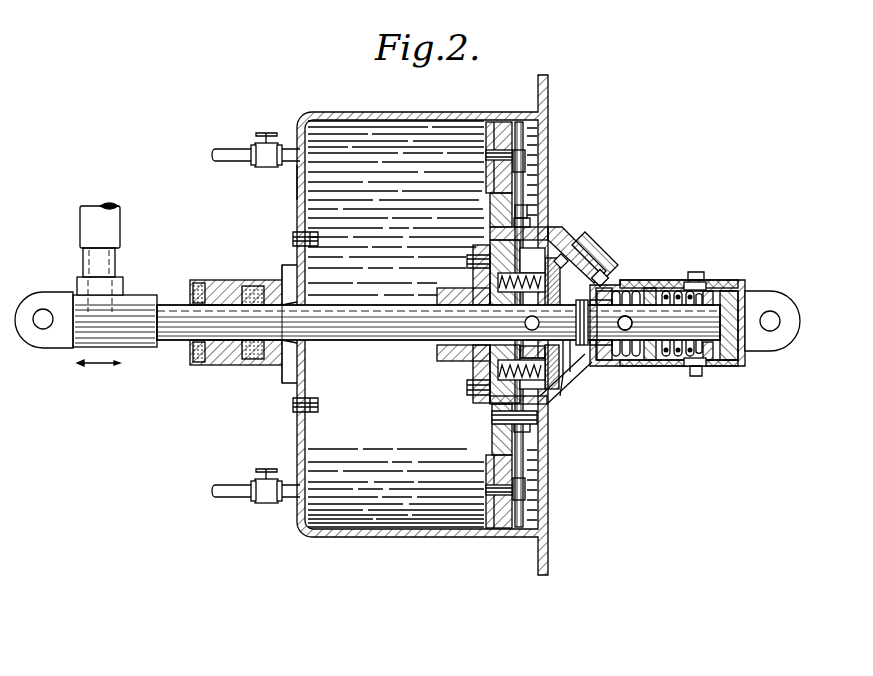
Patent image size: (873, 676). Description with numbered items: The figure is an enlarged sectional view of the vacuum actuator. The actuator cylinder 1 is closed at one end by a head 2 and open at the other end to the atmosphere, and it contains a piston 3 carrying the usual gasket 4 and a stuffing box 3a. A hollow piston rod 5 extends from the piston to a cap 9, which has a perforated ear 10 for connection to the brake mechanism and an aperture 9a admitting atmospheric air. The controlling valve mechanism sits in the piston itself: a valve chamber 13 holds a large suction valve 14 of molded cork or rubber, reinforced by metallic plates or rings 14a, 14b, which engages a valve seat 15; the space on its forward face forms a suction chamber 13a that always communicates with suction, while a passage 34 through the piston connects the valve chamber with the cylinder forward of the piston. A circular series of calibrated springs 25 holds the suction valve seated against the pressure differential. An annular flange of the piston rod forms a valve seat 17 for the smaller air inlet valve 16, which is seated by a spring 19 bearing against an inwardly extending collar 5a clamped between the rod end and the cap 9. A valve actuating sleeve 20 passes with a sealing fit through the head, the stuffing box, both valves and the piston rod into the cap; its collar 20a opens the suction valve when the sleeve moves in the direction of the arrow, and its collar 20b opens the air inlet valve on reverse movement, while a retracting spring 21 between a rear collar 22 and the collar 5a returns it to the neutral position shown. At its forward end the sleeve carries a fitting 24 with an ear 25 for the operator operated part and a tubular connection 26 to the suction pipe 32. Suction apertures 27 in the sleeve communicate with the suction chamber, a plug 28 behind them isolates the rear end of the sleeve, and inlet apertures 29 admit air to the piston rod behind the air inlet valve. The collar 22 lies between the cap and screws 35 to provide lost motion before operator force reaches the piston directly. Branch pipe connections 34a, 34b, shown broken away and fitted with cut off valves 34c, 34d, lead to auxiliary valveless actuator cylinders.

The actuator cylinder 1 is at (418, 113).
The head 2 is at (300, 175).
The piston 3 is at (490, 198).
The stuffing box 3a is at (470, 360).
The gasket 4 is at (514, 118).
The hollow piston rod 5 is at (605, 362).
The collar 5a is at (612, 362).
The cap 9 is at (715, 289).
The aperture 9a is at (742, 356).
The perforated ear 10 is at (775, 312).
The valve chamber 13 is at (565, 375).
The suction chamber 13a is at (540, 240).
The suction valve 14 is at (604, 268).
The reinforcing plate 14a is at (572, 247).
The reinforcing plate 14b is at (612, 283).
The valve seat 15 is at (570, 262).
The air inlet valve 16 is at (604, 292).
The valve seat 17 is at (590, 352).
The spring 19 is at (640, 292).
The valve actuating sleeve 20 is at (240, 350).
The collar 20a is at (566, 352).
The collar 20b is at (574, 370).
The retracting spring 21 is at (672, 289).
The collar 22 is at (710, 369).
The fitting 24 is at (79, 352).
The springs 25 is at (34, 360).
The tubular connection 26 is at (110, 272).
The suction apertures 27 is at (532, 355).
The plug 28 is at (646, 290).
The inlet apertures 29 is at (626, 334).
The suction pipe 32 is at (116, 230).
The passage 34 is at (522, 224).
The branch pipe connection 34a is at (233, 158).
The branch pipe connection 34b is at (233, 486).
The cut off valve 34c is at (272, 135).
The cut off valve 34d is at (270, 473).
The screws 35 is at (696, 372).